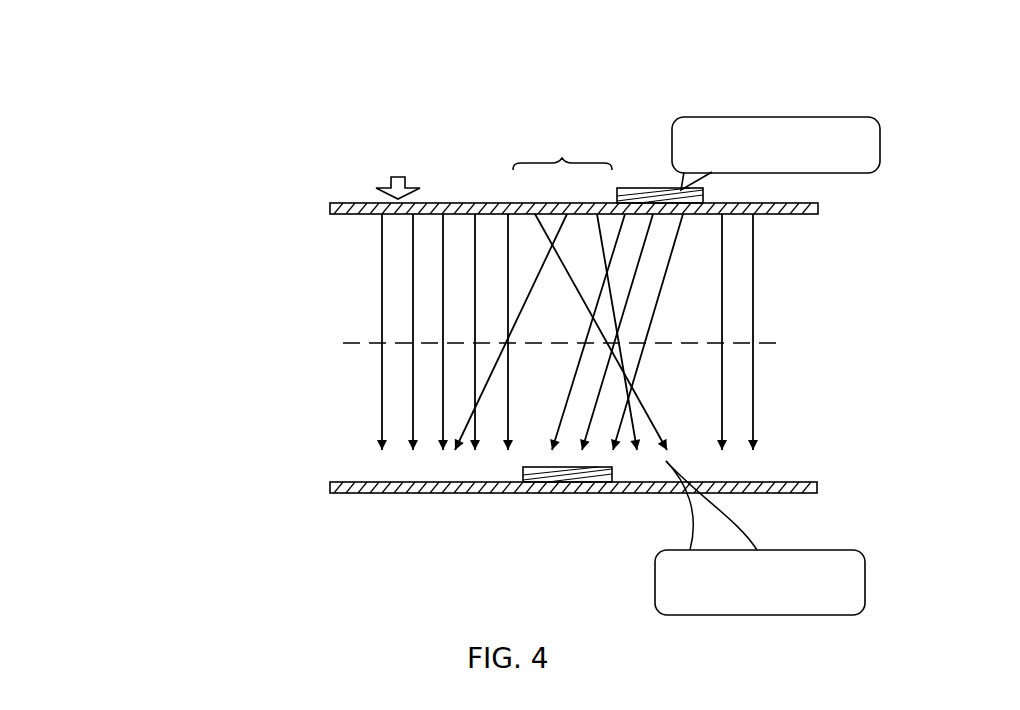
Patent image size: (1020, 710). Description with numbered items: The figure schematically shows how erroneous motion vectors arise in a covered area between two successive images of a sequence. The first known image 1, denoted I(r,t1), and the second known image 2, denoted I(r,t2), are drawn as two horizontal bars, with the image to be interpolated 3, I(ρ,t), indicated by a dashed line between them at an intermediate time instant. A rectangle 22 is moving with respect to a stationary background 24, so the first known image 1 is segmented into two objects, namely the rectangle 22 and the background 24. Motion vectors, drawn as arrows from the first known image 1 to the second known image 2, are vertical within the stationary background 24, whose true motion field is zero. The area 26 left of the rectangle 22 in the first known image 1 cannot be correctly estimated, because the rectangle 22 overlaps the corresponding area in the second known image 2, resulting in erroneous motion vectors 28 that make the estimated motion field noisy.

The first known image 1 is at (820, 208).
The second known image 2 is at (820, 486).
The image to be interpolated 3 is at (807, 345).
The rectangle 22 is at (648, 187).
The stationary background 24 is at (340, 202).
The area 26 is at (540, 202).
The erroneous motion vectors 28 is at (650, 455).